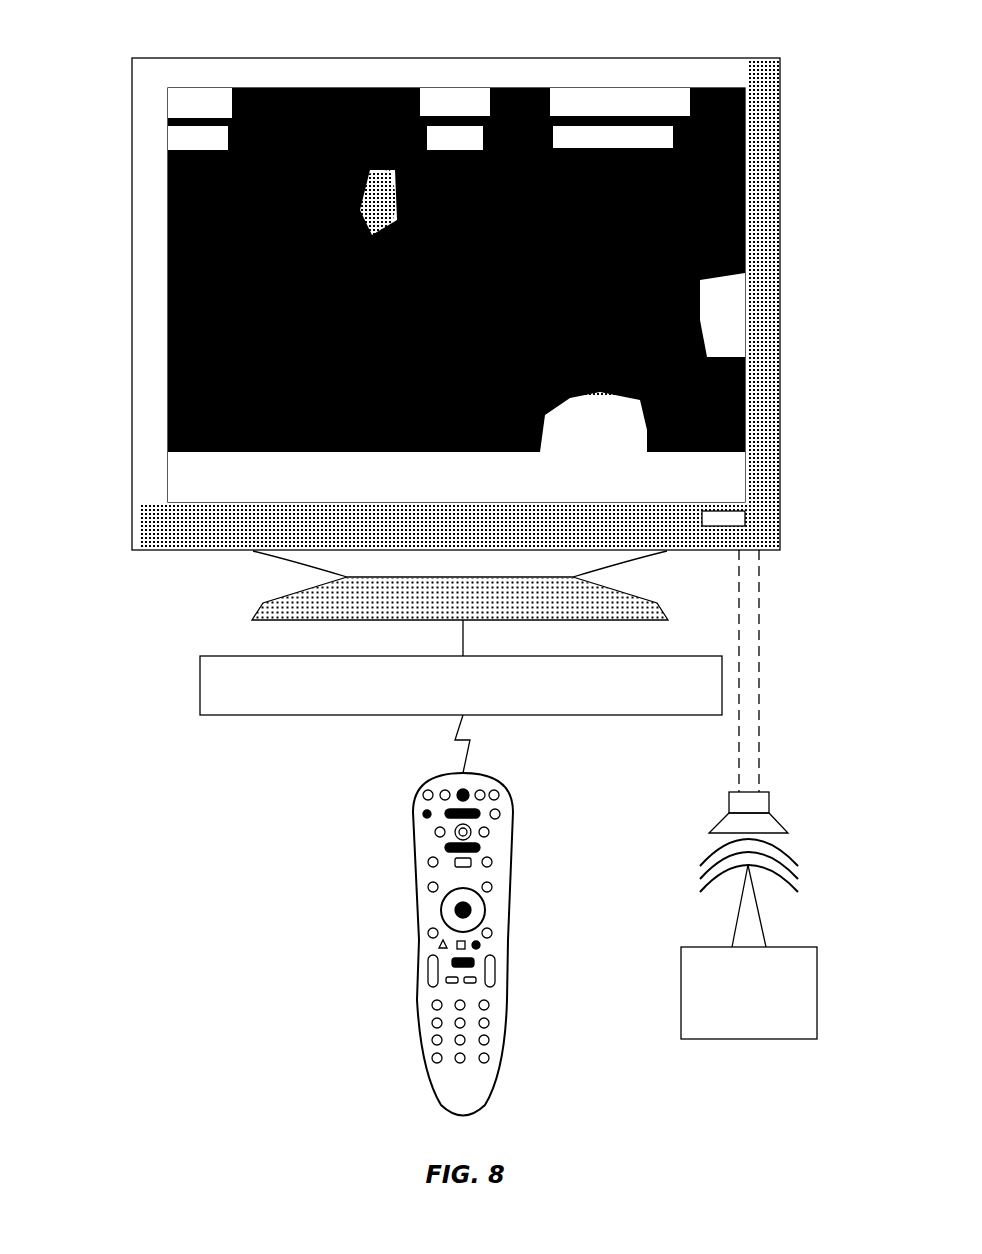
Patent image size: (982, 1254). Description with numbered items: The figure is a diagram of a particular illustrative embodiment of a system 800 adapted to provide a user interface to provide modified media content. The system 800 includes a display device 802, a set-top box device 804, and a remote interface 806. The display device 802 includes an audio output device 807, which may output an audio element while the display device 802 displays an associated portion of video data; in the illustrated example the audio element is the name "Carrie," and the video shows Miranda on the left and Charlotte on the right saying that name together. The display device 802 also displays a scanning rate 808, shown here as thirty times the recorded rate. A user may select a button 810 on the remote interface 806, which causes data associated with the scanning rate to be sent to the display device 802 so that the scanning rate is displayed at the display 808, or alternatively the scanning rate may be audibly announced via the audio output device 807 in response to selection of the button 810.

The system 800 is at (806, 68).
The display device 802 is at (132, 238).
The set-top box device 804 is at (200, 687).
The remote interface 806 is at (418, 970).
The audio output device 807 is at (729, 818).
The scanning rate 808 is at (168, 478).
The button 810 is at (438, 945).